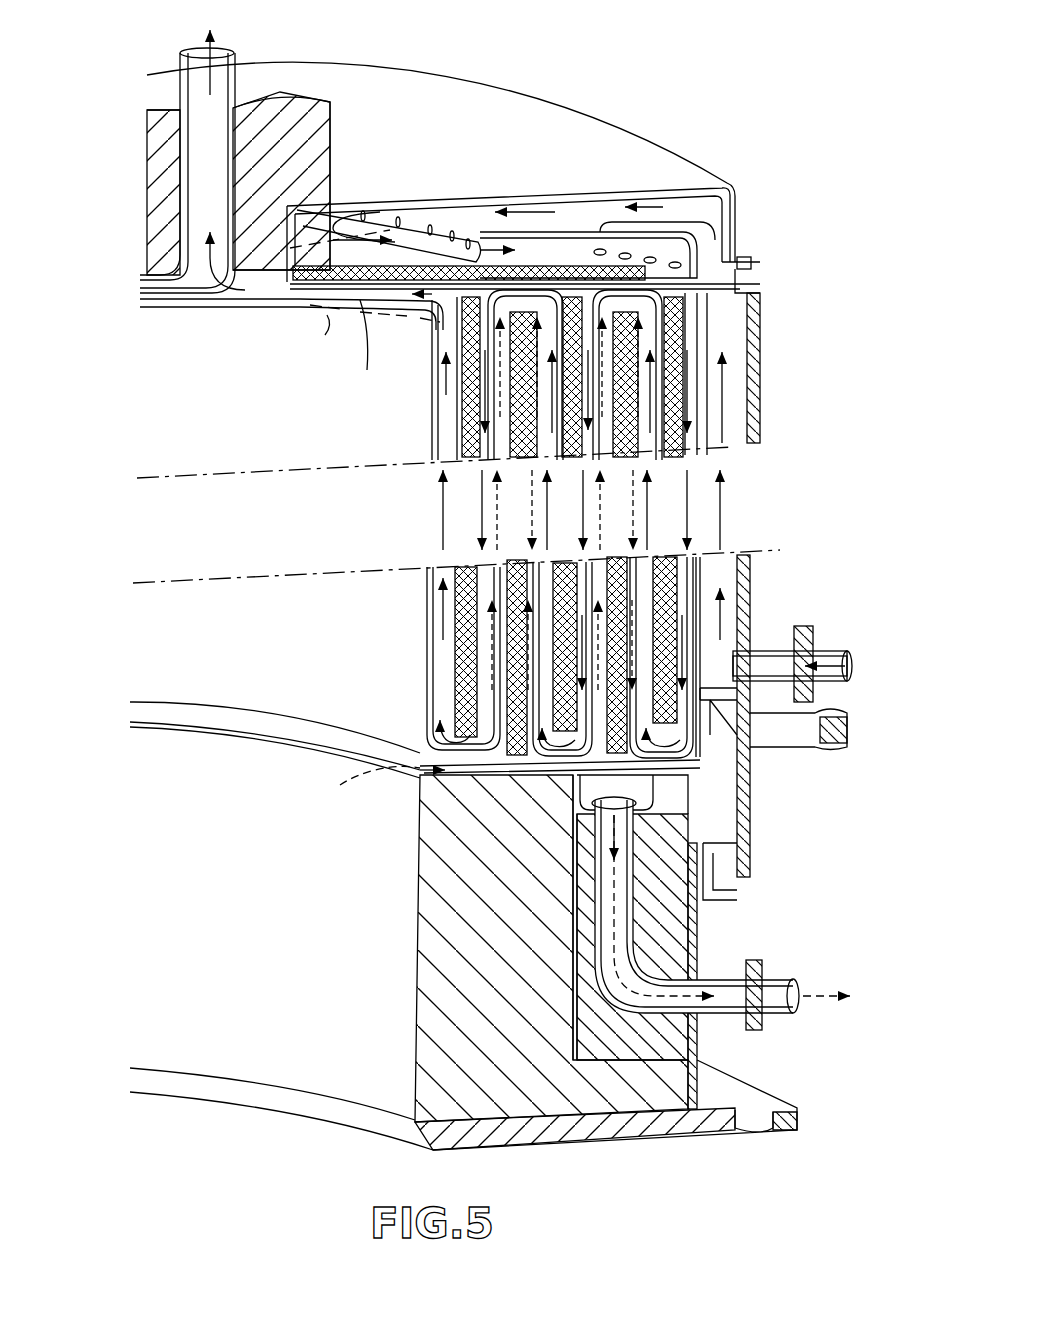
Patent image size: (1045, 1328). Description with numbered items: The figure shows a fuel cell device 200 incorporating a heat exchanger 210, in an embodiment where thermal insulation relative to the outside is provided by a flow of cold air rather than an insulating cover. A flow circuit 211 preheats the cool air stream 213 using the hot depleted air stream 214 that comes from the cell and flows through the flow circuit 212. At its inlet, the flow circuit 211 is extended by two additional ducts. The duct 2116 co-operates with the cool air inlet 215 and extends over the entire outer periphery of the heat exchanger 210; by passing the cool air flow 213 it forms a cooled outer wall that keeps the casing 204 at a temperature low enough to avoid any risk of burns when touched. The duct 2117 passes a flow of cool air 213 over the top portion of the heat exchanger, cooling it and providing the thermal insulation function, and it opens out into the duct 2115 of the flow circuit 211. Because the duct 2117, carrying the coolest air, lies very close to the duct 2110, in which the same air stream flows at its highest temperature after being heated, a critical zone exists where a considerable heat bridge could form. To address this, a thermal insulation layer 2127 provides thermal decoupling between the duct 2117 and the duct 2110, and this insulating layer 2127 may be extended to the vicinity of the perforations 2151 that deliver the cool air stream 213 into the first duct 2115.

The fuel cell device 200 is at (566, 92).
The casing 204 is at (752, 575).
The heat exchanger 210 is at (392, 618).
The flow circuit 211 is at (693, 329).
The flow circuit 212 is at (478, 682).
The cool air stream 213 is at (205, 62).
The hot depleted air stream 214 is at (360, 778).
The cool air inlet 215 is at (846, 702).
The duct 2110 is at (440, 355).
The duct 2115 is at (695, 392).
The duct 2116 is at (722, 602).
The duct 2117 is at (573, 215).
The thermal insulation layer 2127 is at (396, 280).
The perforations 2151 is at (662, 290).